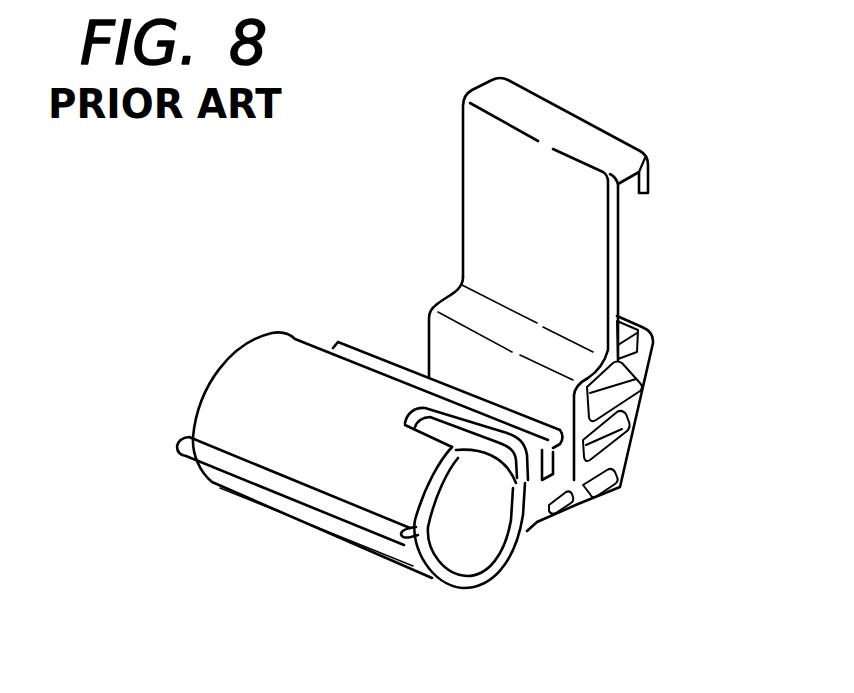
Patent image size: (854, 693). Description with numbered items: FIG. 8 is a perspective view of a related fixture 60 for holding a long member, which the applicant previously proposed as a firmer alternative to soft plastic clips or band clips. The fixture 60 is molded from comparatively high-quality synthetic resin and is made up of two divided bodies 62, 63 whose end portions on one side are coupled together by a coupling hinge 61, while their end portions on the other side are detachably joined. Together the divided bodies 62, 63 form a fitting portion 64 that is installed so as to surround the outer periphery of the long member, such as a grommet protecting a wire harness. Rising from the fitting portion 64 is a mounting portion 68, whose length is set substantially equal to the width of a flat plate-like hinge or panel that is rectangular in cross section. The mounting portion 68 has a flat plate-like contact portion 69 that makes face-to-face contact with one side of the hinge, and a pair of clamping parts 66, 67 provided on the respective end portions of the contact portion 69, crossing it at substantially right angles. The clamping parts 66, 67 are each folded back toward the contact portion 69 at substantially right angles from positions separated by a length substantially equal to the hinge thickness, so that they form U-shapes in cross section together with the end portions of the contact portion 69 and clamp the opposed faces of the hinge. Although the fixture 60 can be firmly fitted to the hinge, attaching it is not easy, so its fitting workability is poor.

The fixture 60 is at (197, 365).
The coupling hinge 61 is at (243, 468).
The divided body 62 is at (288, 368).
The divided body 63 is at (393, 550).
The fitting portion 64 is at (309, 532).
The clamping part 66 is at (480, 88).
The clamping part 67 is at (640, 368).
The mounting portion 68 is at (461, 184).
The contact portion 69 is at (622, 232).